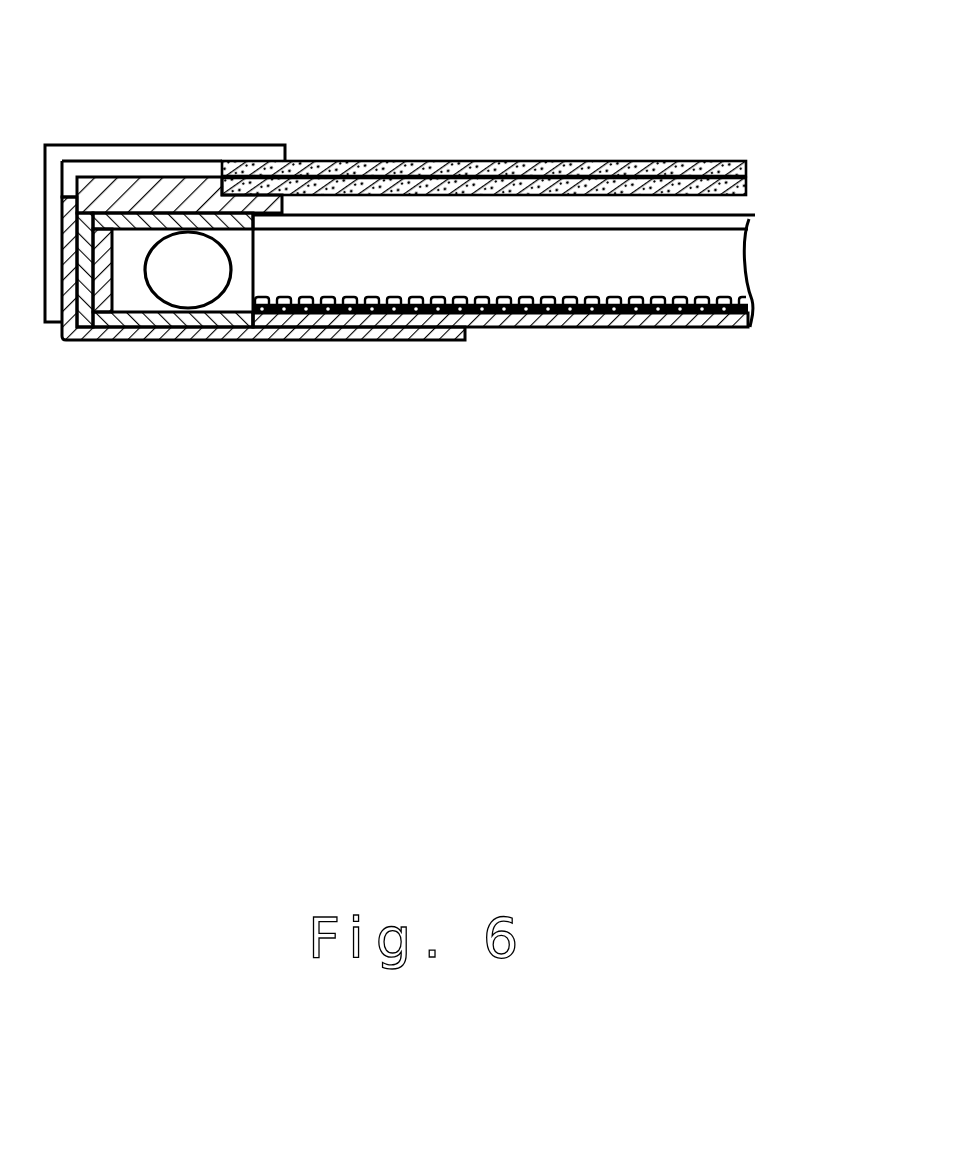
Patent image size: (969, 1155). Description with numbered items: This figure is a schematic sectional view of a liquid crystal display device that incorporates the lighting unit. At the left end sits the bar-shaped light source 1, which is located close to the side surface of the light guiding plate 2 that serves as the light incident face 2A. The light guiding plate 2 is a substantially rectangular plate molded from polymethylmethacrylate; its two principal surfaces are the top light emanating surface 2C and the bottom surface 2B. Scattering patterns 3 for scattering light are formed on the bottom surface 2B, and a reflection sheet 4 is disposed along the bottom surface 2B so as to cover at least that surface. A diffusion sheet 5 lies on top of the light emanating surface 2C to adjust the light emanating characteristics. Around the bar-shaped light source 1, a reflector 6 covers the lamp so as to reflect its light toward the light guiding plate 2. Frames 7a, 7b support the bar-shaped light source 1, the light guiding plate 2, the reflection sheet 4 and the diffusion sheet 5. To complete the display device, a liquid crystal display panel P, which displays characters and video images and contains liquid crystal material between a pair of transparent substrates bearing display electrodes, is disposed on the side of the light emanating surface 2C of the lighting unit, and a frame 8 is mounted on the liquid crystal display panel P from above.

The bar-shaped light source 1 is at (182, 288).
The light guiding plate 2 is at (544, 329).
The light incident face 2A is at (250, 288).
The bottom surface 2B is at (493, 307).
The light emanating surface 2C is at (675, 222).
The scattering patterns 3 is at (567, 297).
The reflection sheet 4 is at (750, 322).
The diffusion sheet 5 is at (752, 218).
The reflector 6 is at (125, 342).
The frame 7a is at (83, 342).
The frame 7b is at (185, 190).
The frame 8 is at (93, 153).
The liquid crystal display panel P is at (775, 158).